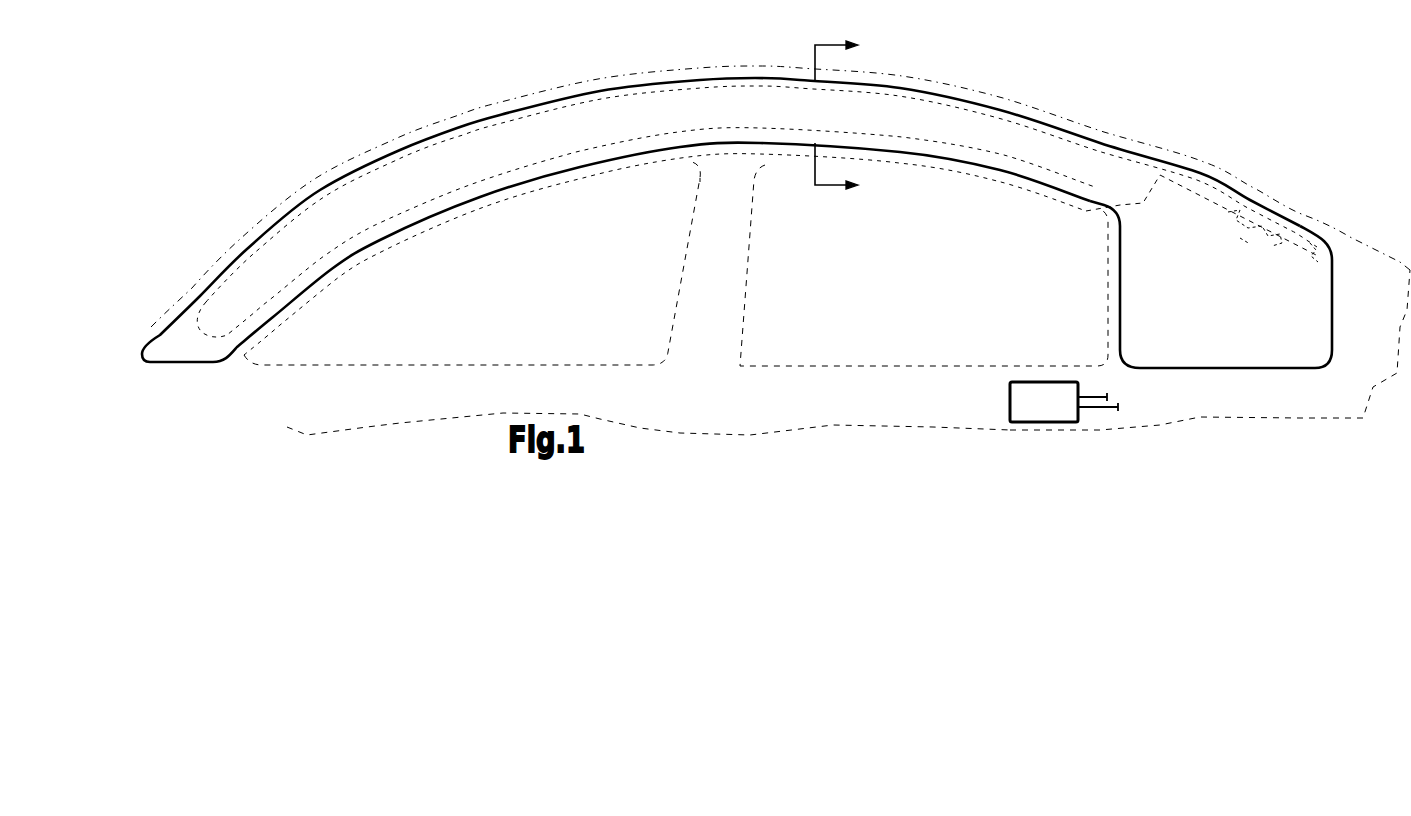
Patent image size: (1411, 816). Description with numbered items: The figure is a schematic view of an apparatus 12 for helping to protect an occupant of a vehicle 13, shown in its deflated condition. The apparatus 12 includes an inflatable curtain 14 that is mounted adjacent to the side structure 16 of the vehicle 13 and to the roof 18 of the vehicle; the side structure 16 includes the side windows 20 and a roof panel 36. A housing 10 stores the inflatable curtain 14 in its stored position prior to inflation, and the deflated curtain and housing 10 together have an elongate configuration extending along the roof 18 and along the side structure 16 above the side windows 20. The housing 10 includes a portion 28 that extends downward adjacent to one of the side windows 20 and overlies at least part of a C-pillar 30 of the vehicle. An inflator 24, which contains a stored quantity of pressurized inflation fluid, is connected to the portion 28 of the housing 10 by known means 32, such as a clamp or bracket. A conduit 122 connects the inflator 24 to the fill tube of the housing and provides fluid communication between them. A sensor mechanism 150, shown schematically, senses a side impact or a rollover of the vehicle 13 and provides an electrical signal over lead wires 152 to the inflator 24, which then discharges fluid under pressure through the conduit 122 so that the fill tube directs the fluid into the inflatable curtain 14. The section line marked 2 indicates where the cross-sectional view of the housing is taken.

The housing 10 is at (398, 192).
The apparatus 12 is at (528, 68).
The vehicle 13 is at (348, 73).
The inflatable curtain 14 is at (582, 105).
The roof 18 is at (508, 100).
The roof panel 36 is at (310, 197).
The side windows 20 is at (467, 348).
The side structure 16 is at (692, 358).
The section line 2- 2 is at (846, 117).
The conduit 122 is at (1188, 198).
The inflator 24 is at (1255, 225).
The means 32 is at (1253, 245).
The portion 28 is at (1280, 352).
The C-pillar 30 is at (1200, 397).
The sensor mechanism 150 is at (1037, 425).
The lead wires 152 is at (1093, 410).